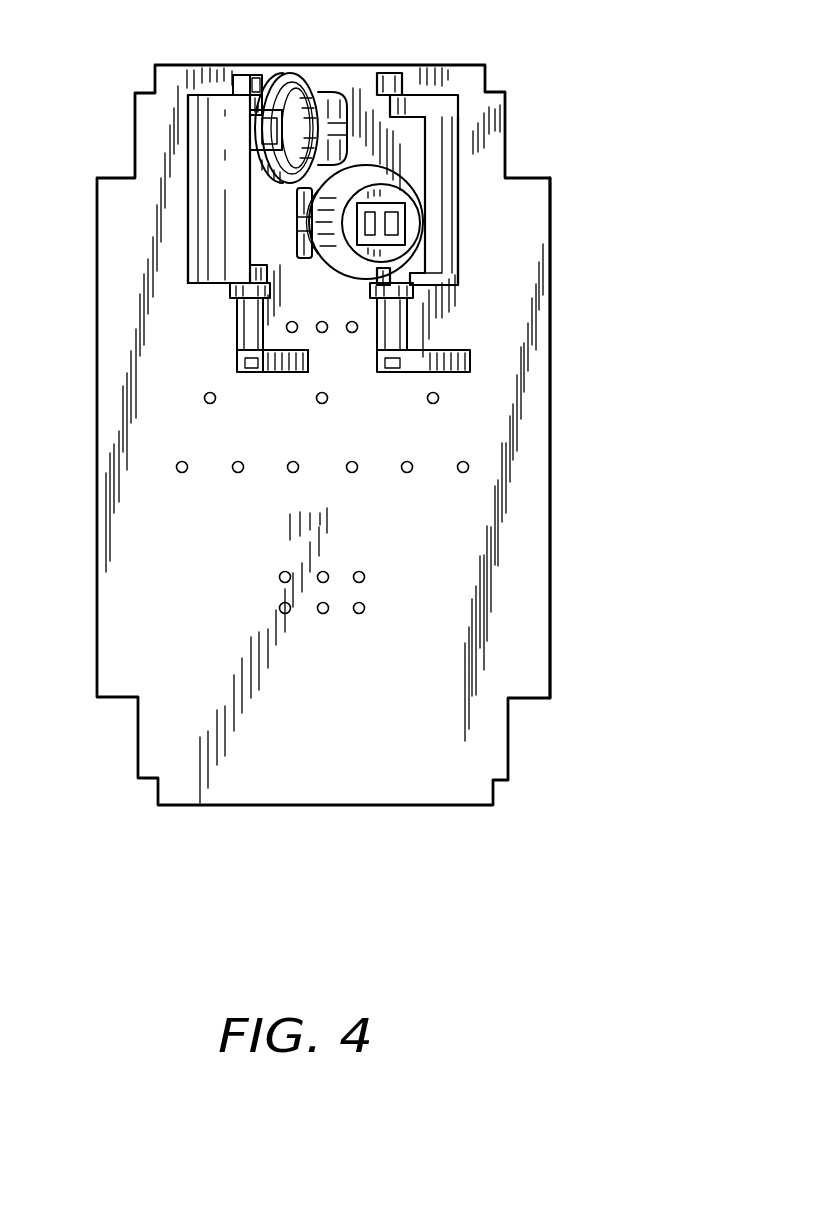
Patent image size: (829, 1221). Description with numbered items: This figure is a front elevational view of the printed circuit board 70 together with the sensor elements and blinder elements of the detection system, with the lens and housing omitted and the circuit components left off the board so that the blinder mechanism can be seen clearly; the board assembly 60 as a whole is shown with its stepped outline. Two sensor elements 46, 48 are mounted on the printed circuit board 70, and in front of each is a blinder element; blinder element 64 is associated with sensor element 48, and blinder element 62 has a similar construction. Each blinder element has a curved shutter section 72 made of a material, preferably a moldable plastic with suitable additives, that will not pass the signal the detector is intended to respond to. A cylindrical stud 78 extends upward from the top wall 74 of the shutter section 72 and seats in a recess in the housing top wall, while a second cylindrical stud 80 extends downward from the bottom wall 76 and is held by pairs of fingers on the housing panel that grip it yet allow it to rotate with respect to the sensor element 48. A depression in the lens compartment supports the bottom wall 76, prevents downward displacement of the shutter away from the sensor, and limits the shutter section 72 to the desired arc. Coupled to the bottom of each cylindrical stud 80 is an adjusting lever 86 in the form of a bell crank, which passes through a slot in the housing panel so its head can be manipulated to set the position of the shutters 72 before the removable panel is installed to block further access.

The sensor element 46 is at (405, 245).
The sensor element 48 is at (302, 95).
The printed circuit board 60 is at (549, 513).
The blinder element 62 is at (458, 160).
The blinder element 64 is at (188, 247).
The printed circuit board 70 is at (550, 407).
The shutter section 72 is at (188, 200).
The top wall 74 is at (219, 93).
The bottom wall 76 is at (217, 289).
The cylindrical stud 78 is at (258, 82).
The cylindrical stud 80 is at (235, 348).
The adjusting lever 86 is at (285, 373).